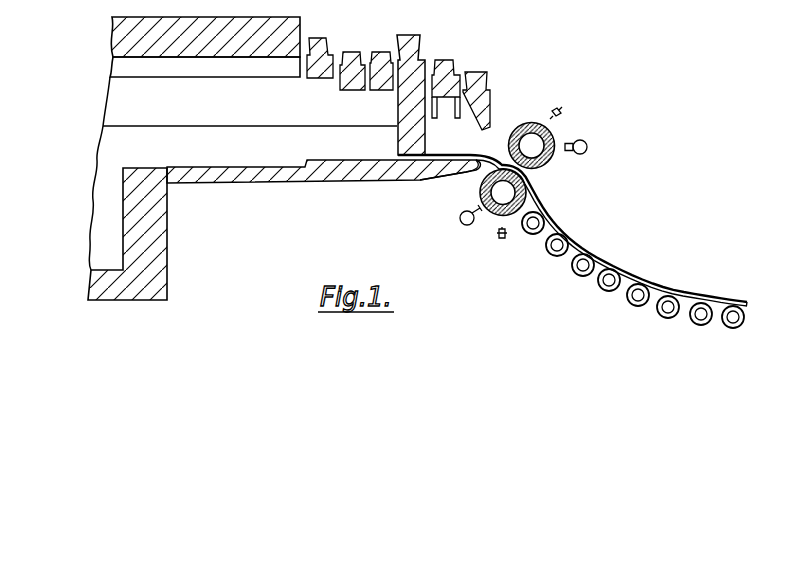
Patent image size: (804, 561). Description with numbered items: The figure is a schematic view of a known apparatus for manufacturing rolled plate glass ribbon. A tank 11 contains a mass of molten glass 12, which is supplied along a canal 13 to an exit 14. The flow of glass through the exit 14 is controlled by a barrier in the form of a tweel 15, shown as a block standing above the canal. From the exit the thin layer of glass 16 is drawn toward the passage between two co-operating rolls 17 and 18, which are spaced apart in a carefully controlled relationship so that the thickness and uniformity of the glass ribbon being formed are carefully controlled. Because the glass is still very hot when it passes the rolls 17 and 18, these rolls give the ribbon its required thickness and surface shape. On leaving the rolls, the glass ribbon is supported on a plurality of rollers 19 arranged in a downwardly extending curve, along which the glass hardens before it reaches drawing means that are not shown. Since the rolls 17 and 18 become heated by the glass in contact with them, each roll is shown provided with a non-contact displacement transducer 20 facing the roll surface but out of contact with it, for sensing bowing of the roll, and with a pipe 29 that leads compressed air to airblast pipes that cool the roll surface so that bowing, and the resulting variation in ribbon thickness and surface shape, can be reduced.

The tank 11 is at (152, 222).
The molten glass 12 is at (96, 238).
The canal 13 is at (253, 160).
The exit 14 is at (415, 178).
The tweel 15 is at (424, 63).
The thin layer of glass 16 is at (477, 152).
The roll 17 is at (556, 160).
The roll 18 is at (479, 191).
The rollers 19 is at (545, 256).
The non-contact displacement transducer 20 is at (562, 113).
The pipe 29 is at (588, 141).